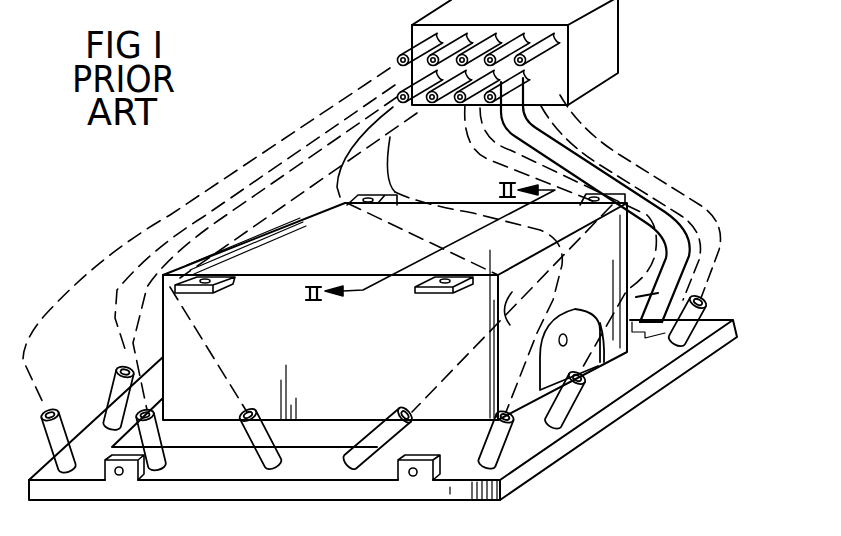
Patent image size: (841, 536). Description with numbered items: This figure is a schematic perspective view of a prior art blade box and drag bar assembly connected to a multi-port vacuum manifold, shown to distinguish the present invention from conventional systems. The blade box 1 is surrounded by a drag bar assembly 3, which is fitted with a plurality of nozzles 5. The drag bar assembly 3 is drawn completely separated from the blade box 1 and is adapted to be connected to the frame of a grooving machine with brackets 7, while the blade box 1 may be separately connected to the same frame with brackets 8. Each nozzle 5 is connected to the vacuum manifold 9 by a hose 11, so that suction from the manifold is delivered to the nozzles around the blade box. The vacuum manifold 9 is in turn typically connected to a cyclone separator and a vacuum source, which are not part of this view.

The blade box 1 is at (328, 374).
The drag bar assembly 3 is at (308, 493).
The nozzles 5 is at (568, 397).
The brackets 7 is at (112, 482).
The brackets 8 is at (208, 293).
The vacuum manifold 9 is at (412, 30).
The hose 11 is at (636, 137).